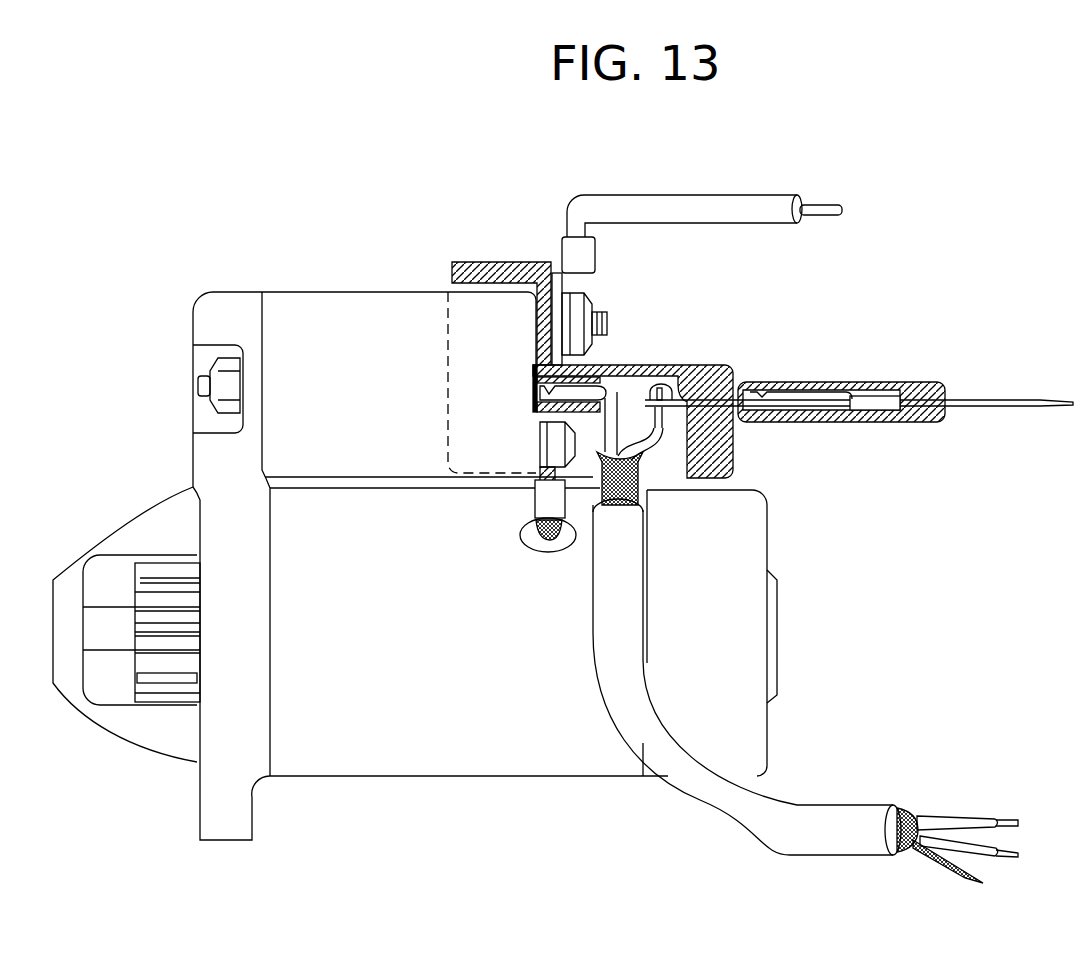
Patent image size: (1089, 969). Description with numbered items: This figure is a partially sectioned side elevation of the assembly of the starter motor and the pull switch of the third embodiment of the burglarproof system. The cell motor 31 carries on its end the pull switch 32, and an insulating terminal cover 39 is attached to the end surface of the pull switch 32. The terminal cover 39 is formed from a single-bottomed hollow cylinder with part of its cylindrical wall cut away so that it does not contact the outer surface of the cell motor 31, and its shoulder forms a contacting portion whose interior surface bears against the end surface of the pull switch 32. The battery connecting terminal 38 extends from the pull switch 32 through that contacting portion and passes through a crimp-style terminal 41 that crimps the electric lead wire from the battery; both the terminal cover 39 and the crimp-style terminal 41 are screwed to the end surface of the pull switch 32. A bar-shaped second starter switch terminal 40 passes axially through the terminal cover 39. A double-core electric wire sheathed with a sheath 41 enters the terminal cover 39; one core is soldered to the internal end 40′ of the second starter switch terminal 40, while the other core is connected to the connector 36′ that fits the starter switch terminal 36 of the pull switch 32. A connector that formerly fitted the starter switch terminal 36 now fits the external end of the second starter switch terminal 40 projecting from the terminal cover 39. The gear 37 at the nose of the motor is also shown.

The cell motor 31 is at (440, 745).
The pull switch 32 is at (335, 318).
The starter switch terminal 36 is at (582, 400).
The connector 36′ is at (536, 415).
The gear 37 is at (162, 662).
The battery connecting terminal 38 is at (610, 326).
The terminal cover 39 is at (486, 272).
The second starter switch terminal 40 is at (787, 408).
The internal end of the second starter switch terminal 40′ is at (678, 400).
The crimp-style terminal 41 is at (572, 272).